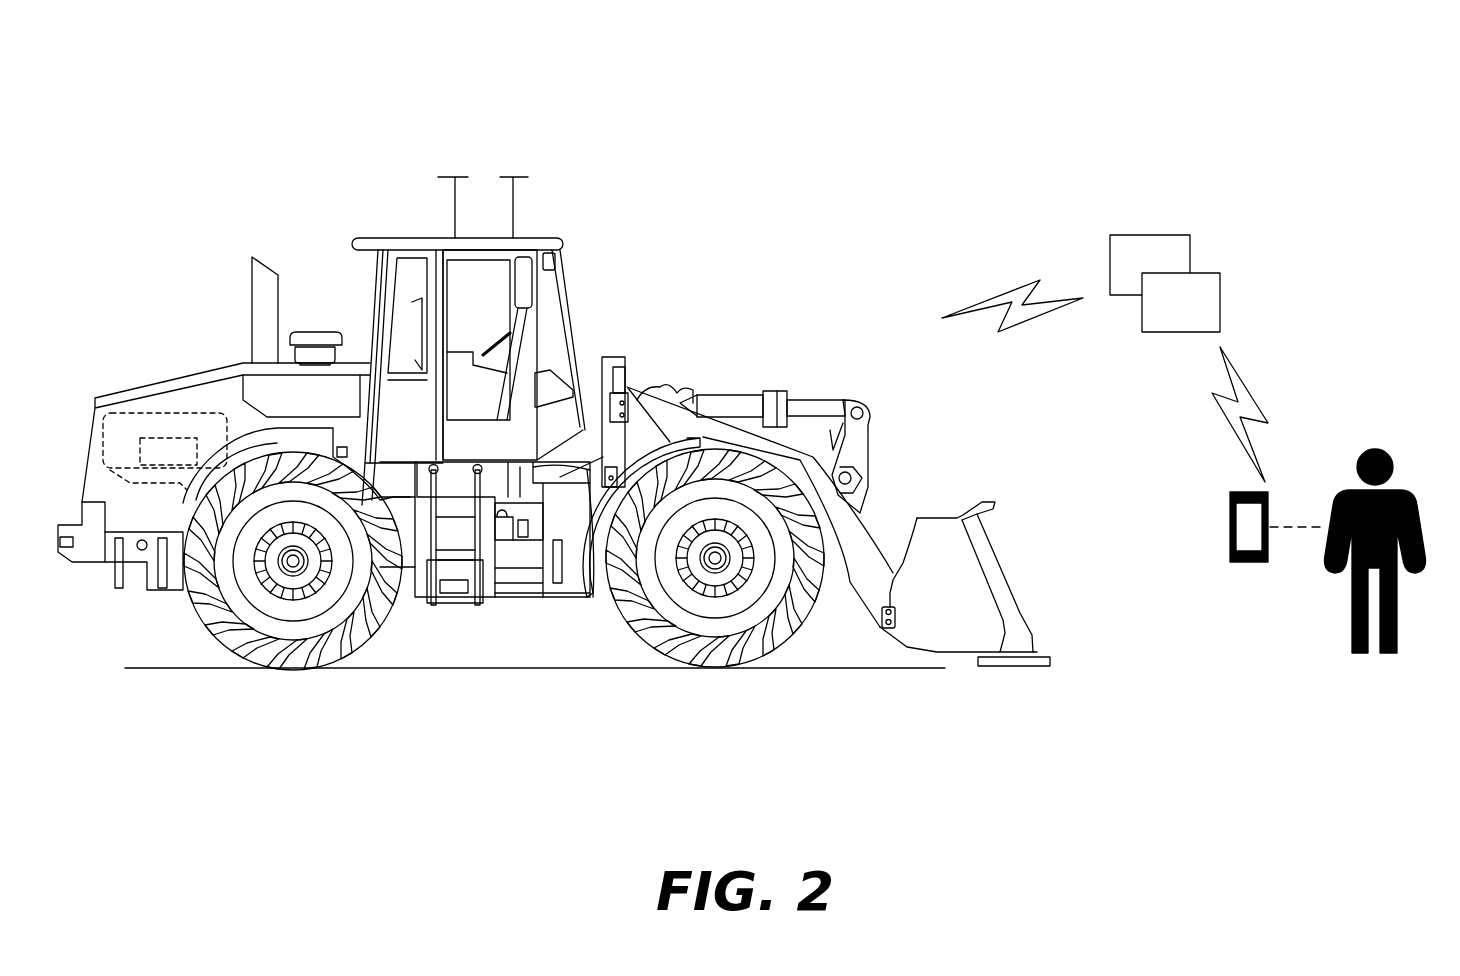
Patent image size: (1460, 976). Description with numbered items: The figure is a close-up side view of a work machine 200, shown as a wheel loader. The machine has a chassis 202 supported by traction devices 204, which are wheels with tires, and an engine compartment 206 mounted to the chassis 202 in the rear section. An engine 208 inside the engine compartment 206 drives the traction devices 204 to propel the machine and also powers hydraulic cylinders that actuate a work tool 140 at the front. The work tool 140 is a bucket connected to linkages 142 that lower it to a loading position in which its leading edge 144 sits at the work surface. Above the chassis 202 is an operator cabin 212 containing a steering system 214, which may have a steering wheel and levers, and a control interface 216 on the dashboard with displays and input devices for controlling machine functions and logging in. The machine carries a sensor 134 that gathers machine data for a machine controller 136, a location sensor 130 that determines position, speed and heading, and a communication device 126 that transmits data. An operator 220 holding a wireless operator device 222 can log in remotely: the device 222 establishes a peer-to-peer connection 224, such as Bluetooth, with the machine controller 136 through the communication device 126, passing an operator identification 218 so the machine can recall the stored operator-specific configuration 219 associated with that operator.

The work machine 200 is at (704, 296).
The chassis 202 is at (525, 597).
The traction devices 204 is at (798, 652).
The engine compartment 206 is at (137, 390).
The engine 208 is at (152, 483).
The machine controller 136 is at (186, 447).
The operator cabin 212 is at (373, 297).
The steering system 214 is at (510, 300).
The control interface 216 is at (558, 380).
The sensor 134 is at (548, 272).
The location sensor 130 is at (447, 177).
The communication device 126 is at (521, 177).
The linkages 142 is at (840, 583).
The work tool 140 is at (938, 535).
The leading edge 144 is at (1030, 637).
The peer-to-peer connection 224 is at (997, 292).
The operator-specific configuration 219 is at (1150, 265).
The operator identification 218 is at (1181, 302).
The wireless operator device 222 is at (1248, 563).
The operator 220 is at (1375, 448).